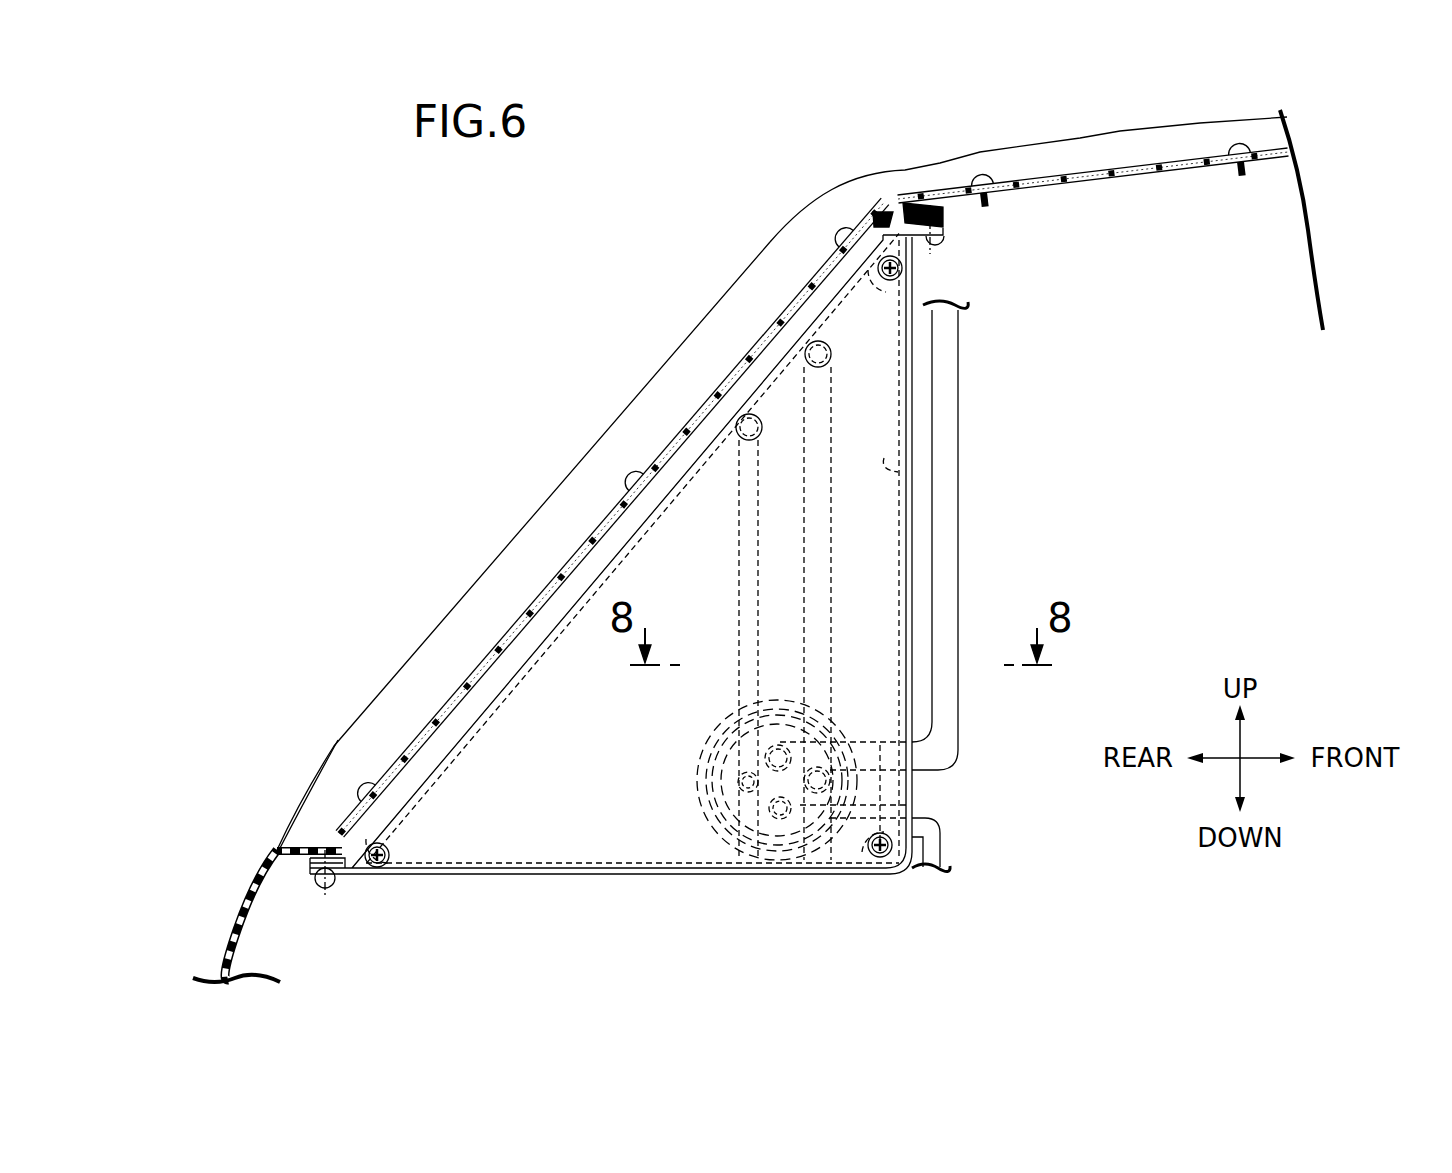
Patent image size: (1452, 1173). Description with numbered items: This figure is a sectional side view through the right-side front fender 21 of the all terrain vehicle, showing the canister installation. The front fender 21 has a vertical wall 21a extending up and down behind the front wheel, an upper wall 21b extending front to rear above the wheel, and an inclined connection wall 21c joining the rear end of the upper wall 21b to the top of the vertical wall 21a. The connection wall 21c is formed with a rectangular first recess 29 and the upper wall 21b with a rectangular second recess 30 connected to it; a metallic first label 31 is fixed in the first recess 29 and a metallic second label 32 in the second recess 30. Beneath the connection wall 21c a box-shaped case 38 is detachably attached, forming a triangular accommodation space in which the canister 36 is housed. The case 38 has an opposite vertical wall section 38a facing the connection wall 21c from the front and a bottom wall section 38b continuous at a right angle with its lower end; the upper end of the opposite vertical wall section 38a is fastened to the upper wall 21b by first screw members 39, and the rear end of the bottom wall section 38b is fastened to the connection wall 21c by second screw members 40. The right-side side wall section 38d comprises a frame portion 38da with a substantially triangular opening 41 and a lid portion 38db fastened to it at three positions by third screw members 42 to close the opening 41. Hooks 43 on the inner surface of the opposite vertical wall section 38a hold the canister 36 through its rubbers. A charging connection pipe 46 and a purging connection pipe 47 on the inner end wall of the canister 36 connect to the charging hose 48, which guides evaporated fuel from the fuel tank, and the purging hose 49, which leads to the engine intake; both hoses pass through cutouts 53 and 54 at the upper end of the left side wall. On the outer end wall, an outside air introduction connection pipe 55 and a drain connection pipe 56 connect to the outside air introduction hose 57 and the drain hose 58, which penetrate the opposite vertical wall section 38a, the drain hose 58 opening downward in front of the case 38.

The front fender 21 is at (741, 523).
The vertical wall 21a is at (240, 905).
The upper wall 21b is at (1150, 120).
The connection wall 21c is at (600, 439).
The first recess 29 is at (355, 748).
The second recess 30 is at (1090, 140).
The first label 31 is at (565, 570).
The second label 32 is at (1020, 180).
The canister 36 is at (700, 777).
The case 38 is at (689, 876).
The opposite vertical wall section 38a is at (912, 548).
The bottom wall section 38b is at (620, 878).
The right-side side wall section 38d is at (600, 938).
The frame portion 38da is at (435, 757).
The lid portion 38db is at (577, 838).
The first screw member 39 is at (945, 236).
The second screw member 40 is at (333, 883).
The opening 41 is at (898, 465).
The third screw member 42 is at (903, 270).
The hook 43 is at (880, 745).
The charging connection pipe 46 is at (735, 795).
The purging connection pipe 47 is at (816, 800).
The charging hose 48 is at (739, 553).
The purging hose 49 is at (831, 490).
The cutout 53 is at (733, 415).
The cutout 54 is at (807, 344).
The outside air introduction connection pipe 55 is at (779, 745).
The drain connection pipe 56 is at (772, 822).
The outside air introduction hose 57 is at (948, 632).
The drain hose 58 is at (940, 850).